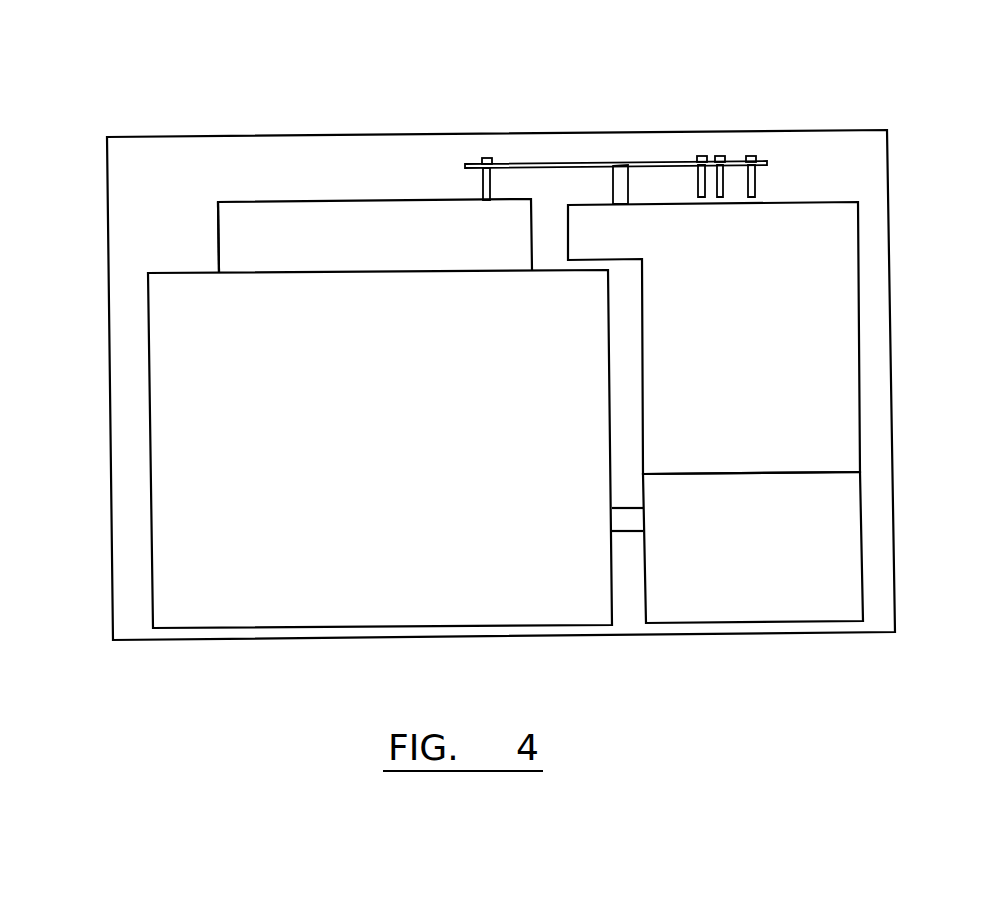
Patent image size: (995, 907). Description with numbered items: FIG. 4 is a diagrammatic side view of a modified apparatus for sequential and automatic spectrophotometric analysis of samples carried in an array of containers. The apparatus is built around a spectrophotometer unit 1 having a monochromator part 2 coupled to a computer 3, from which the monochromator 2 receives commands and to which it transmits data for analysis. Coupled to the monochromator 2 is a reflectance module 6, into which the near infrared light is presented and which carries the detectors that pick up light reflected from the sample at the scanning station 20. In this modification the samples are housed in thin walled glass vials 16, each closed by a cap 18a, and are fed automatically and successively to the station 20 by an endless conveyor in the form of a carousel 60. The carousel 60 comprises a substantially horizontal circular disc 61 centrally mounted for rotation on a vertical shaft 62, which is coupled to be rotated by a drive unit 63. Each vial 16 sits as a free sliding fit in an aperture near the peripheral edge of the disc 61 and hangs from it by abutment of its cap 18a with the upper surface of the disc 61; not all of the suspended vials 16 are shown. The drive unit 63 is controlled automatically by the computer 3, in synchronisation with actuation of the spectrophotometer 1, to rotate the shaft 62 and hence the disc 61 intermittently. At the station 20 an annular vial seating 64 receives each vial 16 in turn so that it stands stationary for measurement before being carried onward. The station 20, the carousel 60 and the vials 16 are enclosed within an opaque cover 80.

The spectrophotometer unit 1 is at (180, 245).
The monochromator part 2 is at (378, 461).
The computer 3 is at (766, 563).
The reflectance module 6 is at (218, 227).
The vials 16 is at (483, 181).
The cap 18a is at (485, 157).
The scanning station 20 is at (344, 190).
The carousel 60 is at (583, 85).
The circular disc 61 is at (582, 160).
The vertical shaft 62 is at (625, 185).
The drive unit 63 is at (775, 346).
The annular vial seating 64 is at (493, 190).
The opaque cover 80 is at (107, 163).